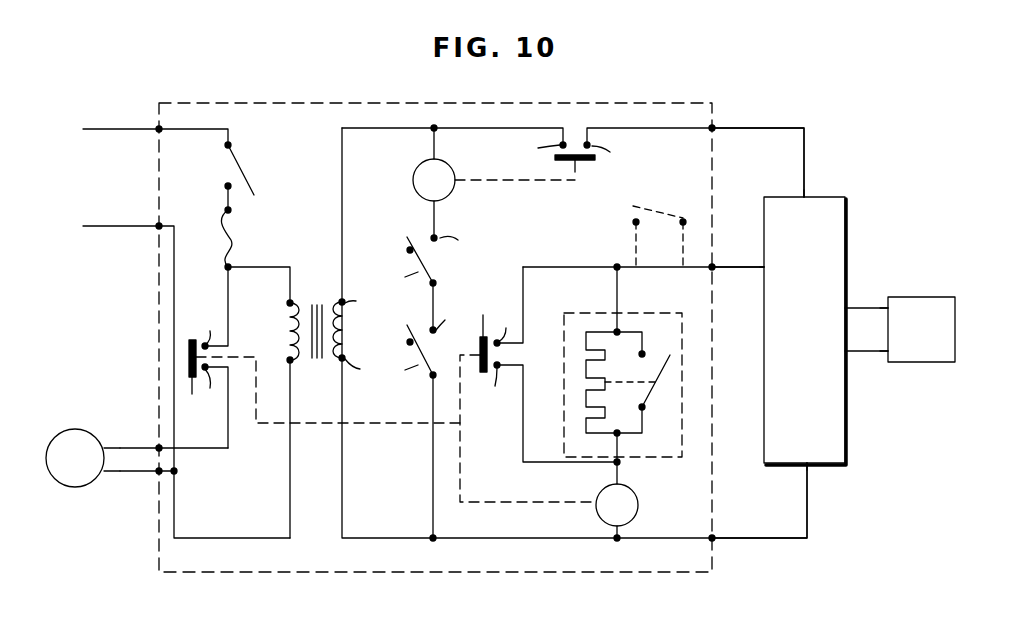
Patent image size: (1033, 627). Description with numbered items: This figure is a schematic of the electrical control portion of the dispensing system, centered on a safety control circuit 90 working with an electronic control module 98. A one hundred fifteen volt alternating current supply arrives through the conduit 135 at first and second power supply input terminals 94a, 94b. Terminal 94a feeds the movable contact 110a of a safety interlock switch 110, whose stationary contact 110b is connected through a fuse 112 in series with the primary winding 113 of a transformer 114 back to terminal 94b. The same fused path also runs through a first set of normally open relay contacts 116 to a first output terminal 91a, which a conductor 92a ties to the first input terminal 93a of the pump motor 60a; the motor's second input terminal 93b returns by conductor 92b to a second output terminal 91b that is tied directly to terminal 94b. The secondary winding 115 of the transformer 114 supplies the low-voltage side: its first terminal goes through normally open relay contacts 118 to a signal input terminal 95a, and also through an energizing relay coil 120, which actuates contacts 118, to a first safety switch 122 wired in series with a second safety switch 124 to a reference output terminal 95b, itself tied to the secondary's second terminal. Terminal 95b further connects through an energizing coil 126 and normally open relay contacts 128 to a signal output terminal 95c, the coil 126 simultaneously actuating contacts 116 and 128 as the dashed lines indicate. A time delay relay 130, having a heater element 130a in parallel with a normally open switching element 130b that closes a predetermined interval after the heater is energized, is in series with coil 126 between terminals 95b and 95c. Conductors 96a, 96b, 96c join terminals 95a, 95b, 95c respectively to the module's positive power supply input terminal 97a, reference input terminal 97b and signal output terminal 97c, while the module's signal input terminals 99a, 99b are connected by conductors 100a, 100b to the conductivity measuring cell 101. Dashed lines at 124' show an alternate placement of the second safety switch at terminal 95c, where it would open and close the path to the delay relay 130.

The safety control circuit 90 is at (331, 101).
The conduit 135 is at (92, 128).
The first power supply input terminal 94a is at (157, 127).
The second power supply input terminal 94b is at (157, 228).
The safety interlock switch 110 is at (245, 171).
The movable contact 110a is at (246, 164).
The stationary contact 110b is at (232, 186).
The fuse 112 is at (234, 238).
The primary winding 113 is at (282, 326).
The transformer 114 is at (316, 364).
The secondary winding 115 is at (348, 335).
The first set of normally open relay contacts 116 is at (200, 331).
The set of normally open relay contacts 118 is at (580, 122).
The energizing relay coil 120 is at (413, 182).
The first safety switch 122 is at (428, 254).
The second safety switch 124 is at (414, 419).
The safety switch in alternate position 124' is at (664, 214).
The energizing coil 126 is at (597, 507).
The set of normally open relay contacts 128 is at (527, 356).
The time delay relay 130 is at (615, 379).
The heater element 130a is at (588, 425).
The normally open switching element 130b is at (648, 392).
The signal input terminal 95a is at (715, 125).
The reference output terminal 95b is at (714, 540).
The signal output terminal 95c is at (714, 265).
The conductor 96a is at (801, 126).
The conductor 96b is at (755, 528).
The conductor 96c is at (760, 269).
The positive power supply input terminal 97a is at (808, 196).
The reference input terminal 97b is at (809, 466).
The signal output terminal 97c is at (762, 271).
The electronic control module 98 is at (848, 222).
The signal input terminal 99a is at (848, 306).
The signal input terminal 99b is at (848, 354).
The conductor 100a is at (874, 306).
The conductor 100b is at (874, 354).
The conductivity measuring cell 101 is at (938, 341).
The pump motor 60a is at (70, 432).
The first output terminal 91a is at (158, 447).
The second output terminal 91b is at (158, 473).
The conductor 92a is at (117, 447).
The conductor 92b is at (120, 472).
The first input terminal 93a is at (105, 447).
The second input terminal 93b is at (100, 478).